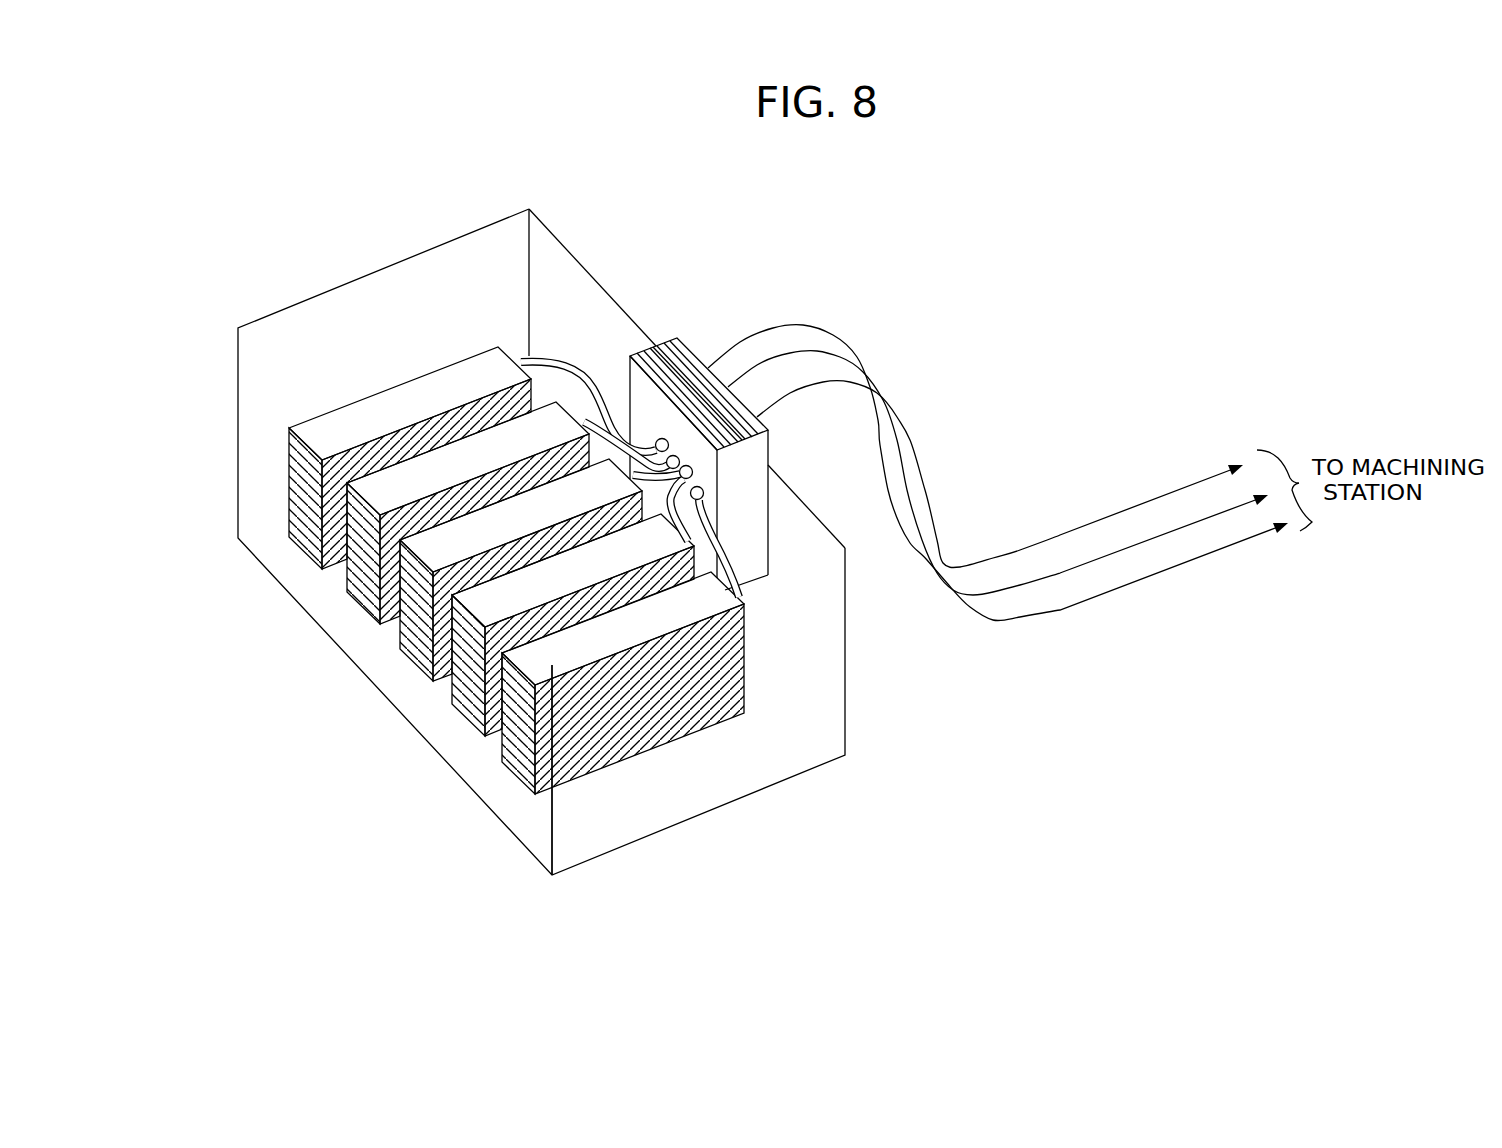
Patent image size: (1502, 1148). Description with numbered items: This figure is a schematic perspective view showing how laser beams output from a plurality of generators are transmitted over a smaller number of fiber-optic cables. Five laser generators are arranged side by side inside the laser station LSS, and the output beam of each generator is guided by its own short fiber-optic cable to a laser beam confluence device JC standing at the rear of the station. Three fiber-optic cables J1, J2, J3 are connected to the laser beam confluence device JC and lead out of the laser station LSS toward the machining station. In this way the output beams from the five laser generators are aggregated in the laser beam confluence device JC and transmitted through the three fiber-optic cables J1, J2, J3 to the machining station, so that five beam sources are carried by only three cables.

The laser station LSS is at (612, 885).
The laser beam confluence device JC is at (674, 338).
The fiber-optic cable J1 is at (765, 329).
The fiber-optic cable J2 is at (813, 348).
The fiber-optic cable J3 is at (817, 391).